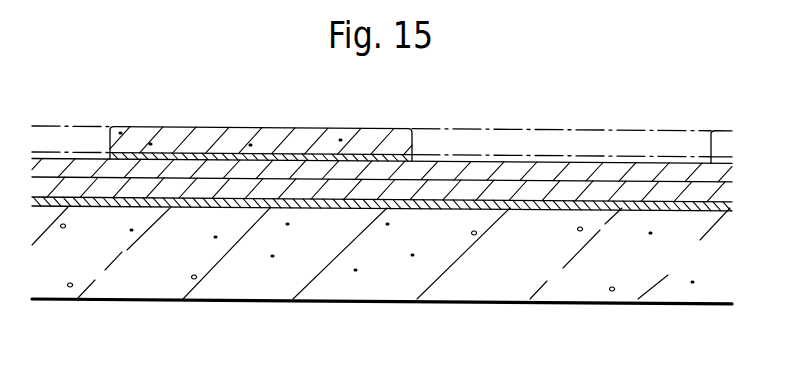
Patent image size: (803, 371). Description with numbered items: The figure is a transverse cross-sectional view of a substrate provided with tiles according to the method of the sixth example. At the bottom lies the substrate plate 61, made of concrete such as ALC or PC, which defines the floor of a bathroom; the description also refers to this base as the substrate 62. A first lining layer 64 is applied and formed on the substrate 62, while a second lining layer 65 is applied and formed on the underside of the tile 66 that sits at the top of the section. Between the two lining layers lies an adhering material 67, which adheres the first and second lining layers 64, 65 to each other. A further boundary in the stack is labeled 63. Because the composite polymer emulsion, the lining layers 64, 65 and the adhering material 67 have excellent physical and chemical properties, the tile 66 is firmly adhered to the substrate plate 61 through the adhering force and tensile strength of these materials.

The substrate plate 61 is at (390, 265).
The substrate 62 is at (283, 199).
The intermediate layer 63 is at (560, 207).
The first lining layer 64 is at (520, 208).
The second lining layer 65 is at (397, 155).
The tile 66 is at (357, 133).
The adhering material 67 is at (510, 172).